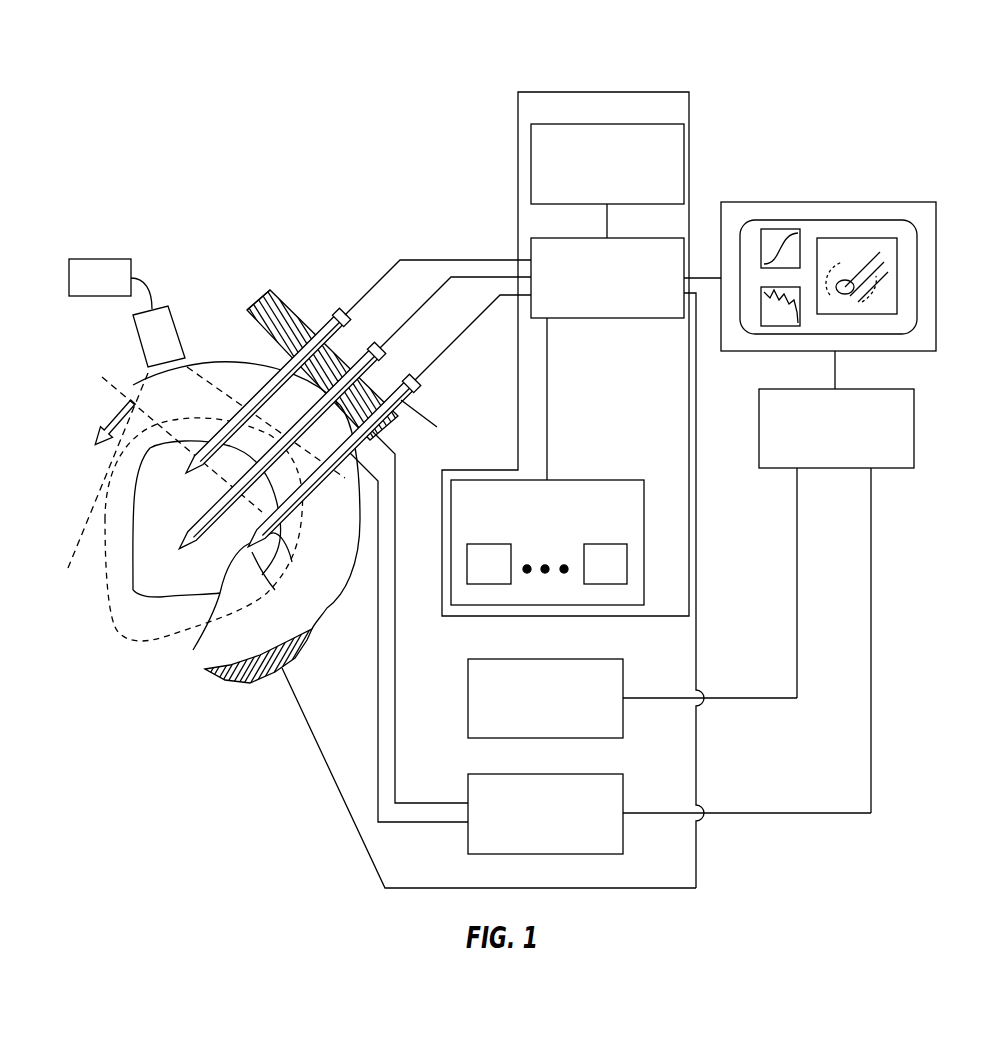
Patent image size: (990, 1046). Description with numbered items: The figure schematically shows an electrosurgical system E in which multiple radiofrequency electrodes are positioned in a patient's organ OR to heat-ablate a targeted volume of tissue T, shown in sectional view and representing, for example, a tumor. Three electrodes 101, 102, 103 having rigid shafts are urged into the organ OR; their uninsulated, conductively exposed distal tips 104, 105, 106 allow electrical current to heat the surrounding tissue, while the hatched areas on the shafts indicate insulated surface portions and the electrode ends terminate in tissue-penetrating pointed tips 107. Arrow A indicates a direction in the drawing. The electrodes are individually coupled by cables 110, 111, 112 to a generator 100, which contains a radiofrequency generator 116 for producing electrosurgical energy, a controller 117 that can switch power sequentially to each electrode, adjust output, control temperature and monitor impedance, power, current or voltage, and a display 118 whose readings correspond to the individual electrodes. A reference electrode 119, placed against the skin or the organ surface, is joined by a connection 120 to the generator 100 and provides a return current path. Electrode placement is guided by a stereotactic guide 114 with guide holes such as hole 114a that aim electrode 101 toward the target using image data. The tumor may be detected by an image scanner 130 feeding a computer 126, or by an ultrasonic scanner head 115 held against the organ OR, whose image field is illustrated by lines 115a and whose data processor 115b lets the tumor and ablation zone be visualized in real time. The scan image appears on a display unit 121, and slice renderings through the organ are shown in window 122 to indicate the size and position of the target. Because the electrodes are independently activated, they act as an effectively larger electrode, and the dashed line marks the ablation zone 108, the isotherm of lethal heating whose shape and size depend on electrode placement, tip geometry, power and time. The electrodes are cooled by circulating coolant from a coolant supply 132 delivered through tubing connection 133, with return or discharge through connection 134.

The generator 100 is at (648, 79).
The electrode 101 is at (333, 312).
The electrode 102 is at (362, 342).
The electrode 103 is at (398, 378).
The distal tip 104 is at (160, 505).
The distal tip 105 is at (215, 577).
The distal tip 106 is at (270, 583).
The tissue-penetrating pointed tip 107 is at (210, 625).
The ablation zone 108 is at (120, 640).
The cable 110 is at (437, 258).
The cable 111 is at (482, 275).
The cable 112 is at (452, 341).
The stereotactic guide 114 is at (256, 297).
The guide hole 114a is at (312, 312).
The ultrasonic scanner head 115 is at (140, 350).
The image lines 115a is at (190, 366).
The data processor 115b is at (125, 259).
The radiofrequency generator 116 is at (603, 318).
The controller 117 is at (632, 110).
The display 118 is at (590, 478).
The reference electrode 119 is at (243, 683).
The connection 120 is at (328, 768).
The display unit 121 is at (735, 202).
The window 122 is at (875, 240).
The computer 126 is at (785, 470).
The image scanner 130 is at (593, 657).
The coolant supply 132 is at (607, 772).
The connection 133 is at (398, 653).
The connection 134 is at (433, 430).
The direction arrow A is at (108, 423).
The electrosurgical system E is at (148, 742).
The targeted volume of tissue T is at (117, 617).
The organ OR is at (327, 608).